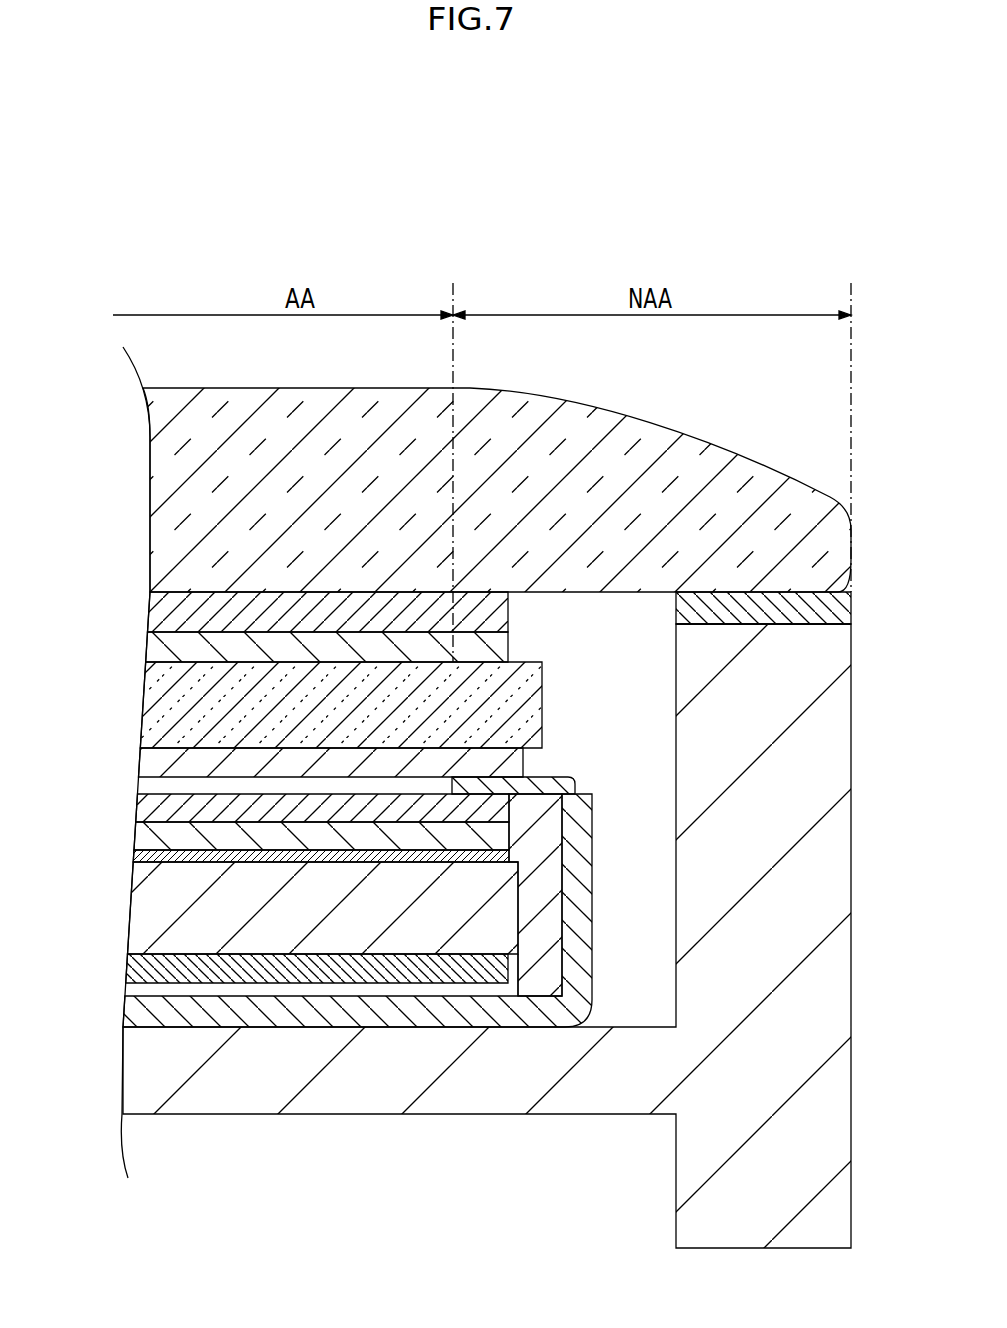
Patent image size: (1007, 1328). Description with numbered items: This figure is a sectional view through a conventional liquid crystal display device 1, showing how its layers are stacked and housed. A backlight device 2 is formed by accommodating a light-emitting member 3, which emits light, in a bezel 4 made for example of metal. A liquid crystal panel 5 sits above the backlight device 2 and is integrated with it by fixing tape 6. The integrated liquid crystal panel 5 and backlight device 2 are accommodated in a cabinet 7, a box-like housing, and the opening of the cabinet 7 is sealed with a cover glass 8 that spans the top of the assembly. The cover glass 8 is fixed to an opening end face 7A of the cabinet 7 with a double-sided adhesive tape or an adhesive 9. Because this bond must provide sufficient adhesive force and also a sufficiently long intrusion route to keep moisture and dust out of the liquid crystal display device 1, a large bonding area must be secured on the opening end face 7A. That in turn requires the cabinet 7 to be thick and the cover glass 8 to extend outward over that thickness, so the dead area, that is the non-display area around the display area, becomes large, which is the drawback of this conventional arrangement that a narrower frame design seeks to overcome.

The liquid crystal display device 1 is at (103, 755).
The backlight device 2 is at (312, 916).
The light-emitting member 3 is at (165, 905).
The bezel 4 is at (68, 885).
The liquid crystal panel 5 is at (178, 705).
The fixing tape 6 is at (560, 781).
The cabinet 7 is at (800, 890).
The opening end face 7A is at (763, 594).
The cover glass 8 is at (767, 503).
The adhesive 9 is at (838, 610).